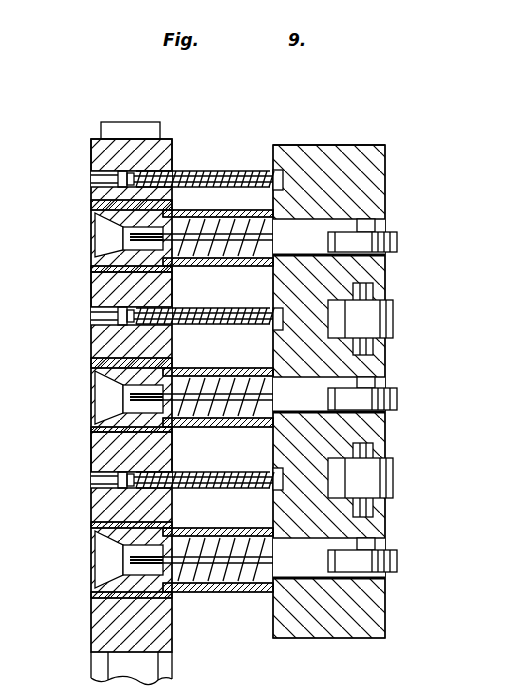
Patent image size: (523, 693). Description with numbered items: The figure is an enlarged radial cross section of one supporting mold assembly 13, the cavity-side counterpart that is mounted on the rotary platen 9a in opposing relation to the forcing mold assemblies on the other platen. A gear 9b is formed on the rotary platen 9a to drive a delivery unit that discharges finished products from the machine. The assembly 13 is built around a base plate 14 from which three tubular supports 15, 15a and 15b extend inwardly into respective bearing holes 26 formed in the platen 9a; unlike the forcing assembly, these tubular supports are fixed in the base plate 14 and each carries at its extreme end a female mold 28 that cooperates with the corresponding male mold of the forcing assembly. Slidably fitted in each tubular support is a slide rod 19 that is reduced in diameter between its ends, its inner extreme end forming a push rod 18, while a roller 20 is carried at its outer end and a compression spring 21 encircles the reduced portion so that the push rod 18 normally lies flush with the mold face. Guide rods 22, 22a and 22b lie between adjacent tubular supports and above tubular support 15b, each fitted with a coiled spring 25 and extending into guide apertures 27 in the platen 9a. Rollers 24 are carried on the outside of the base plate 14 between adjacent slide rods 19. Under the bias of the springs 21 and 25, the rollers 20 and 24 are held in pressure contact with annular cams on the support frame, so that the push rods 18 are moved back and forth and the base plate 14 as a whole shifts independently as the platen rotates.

The rotary platen 9a is at (105, 624).
The gear 9b is at (128, 121).
The supporting mold assembly 13 is at (302, 145).
The base plate 14 is at (342, 160).
The tubular support 15 is at (233, 528).
The tubular support 15a is at (258, 369).
The tubular support 15b is at (219, 210).
The push rod 18 is at (118, 252).
The slide rod 19 is at (380, 224).
The roller 20 is at (398, 241).
The compression spring 21 is at (219, 267).
The guide rod 22 is at (100, 456).
The guide rod 22a is at (100, 294).
The guide rod 22b is at (193, 167).
The roller 24 is at (394, 311).
The coiled spring 25 is at (259, 170).
The bearing hole 26 is at (92, 214).
The guide aperture 27 is at (117, 179).
The female mold 28 is at (107, 239).